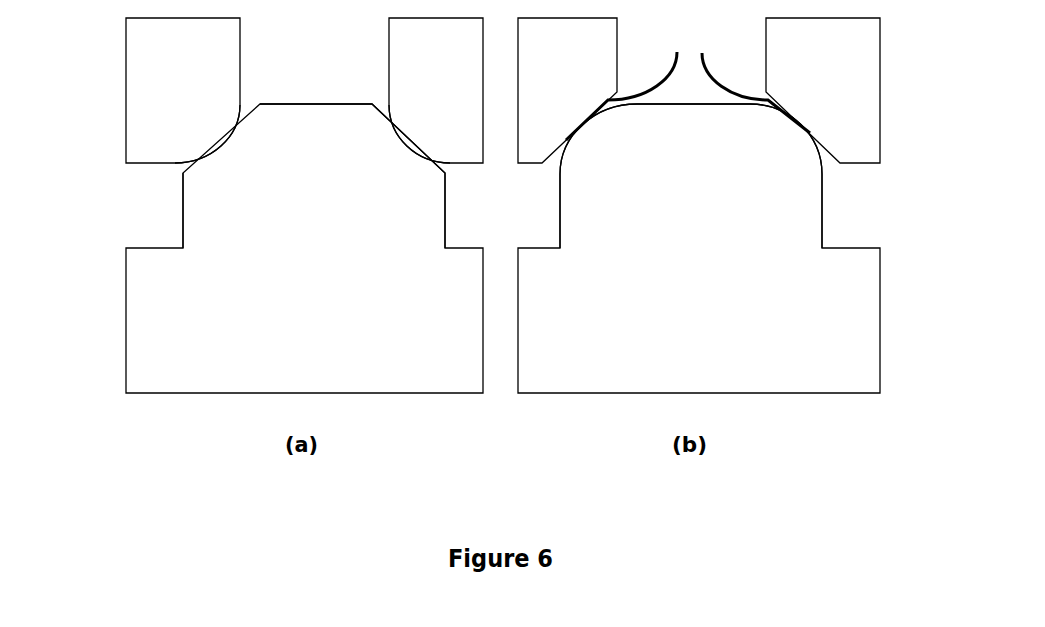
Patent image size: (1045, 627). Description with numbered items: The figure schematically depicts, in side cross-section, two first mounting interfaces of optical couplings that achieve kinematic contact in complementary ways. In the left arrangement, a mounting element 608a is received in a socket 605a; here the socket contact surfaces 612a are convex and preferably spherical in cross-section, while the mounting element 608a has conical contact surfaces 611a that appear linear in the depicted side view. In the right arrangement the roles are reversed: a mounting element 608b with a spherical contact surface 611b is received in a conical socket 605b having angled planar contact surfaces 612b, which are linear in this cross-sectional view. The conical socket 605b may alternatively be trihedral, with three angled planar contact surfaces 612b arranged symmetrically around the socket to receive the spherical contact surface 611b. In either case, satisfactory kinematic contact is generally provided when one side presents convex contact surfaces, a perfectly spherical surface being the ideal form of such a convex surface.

The socket 605a is at (163, 105).
The mounting element 608a is at (200, 227).
The conical contact surfaces 611a is at (430, 167).
The socket contact surfaces 612a is at (395, 115).
The conical socket 605b is at (817, 107).
The mounting element 608b is at (795, 230).
The spherical contact surface 611b is at (810, 148).
The angled planar contact surfaces 612b is at (688, 85).